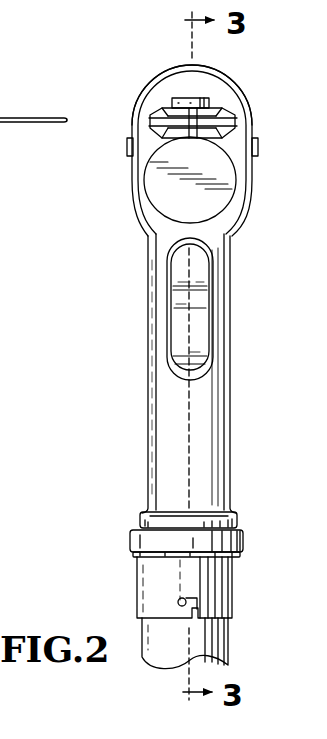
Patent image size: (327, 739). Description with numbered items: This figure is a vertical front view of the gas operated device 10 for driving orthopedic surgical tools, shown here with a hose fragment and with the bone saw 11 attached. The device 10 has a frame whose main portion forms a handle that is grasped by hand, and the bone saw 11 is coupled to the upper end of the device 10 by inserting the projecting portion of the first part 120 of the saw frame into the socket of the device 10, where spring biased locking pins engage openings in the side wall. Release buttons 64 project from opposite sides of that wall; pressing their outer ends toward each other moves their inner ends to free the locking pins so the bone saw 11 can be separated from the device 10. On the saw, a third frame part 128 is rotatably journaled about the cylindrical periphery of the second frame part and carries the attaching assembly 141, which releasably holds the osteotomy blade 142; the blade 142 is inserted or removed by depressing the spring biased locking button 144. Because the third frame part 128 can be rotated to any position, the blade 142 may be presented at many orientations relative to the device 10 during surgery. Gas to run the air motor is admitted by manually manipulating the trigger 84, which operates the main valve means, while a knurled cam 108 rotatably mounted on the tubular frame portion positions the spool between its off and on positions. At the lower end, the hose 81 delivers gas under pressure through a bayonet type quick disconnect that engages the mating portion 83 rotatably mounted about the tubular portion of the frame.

The gas operated device 10 is at (140, 404).
The bone saw 11 is at (248, 178).
The release buttons 64 is at (120, 149).
The hose 81 is at (223, 642).
The mating portion of the quick disconnect 83 is at (229, 585).
The trigger 84 is at (204, 344).
The cam 108 is at (246, 542).
The first part of the bone saw frame 120 is at (170, 82).
The third frame part 128 is at (222, 198).
The attaching assembly 141 is at (232, 106).
The osteotomy blade 142 is at (230, 119).
The locking button 144 is at (206, 99).